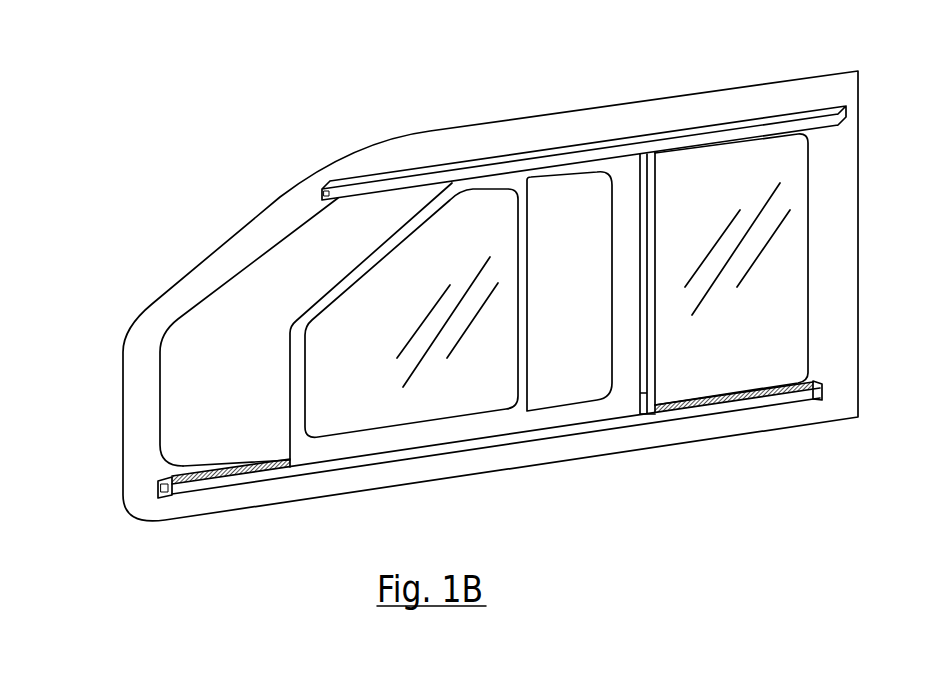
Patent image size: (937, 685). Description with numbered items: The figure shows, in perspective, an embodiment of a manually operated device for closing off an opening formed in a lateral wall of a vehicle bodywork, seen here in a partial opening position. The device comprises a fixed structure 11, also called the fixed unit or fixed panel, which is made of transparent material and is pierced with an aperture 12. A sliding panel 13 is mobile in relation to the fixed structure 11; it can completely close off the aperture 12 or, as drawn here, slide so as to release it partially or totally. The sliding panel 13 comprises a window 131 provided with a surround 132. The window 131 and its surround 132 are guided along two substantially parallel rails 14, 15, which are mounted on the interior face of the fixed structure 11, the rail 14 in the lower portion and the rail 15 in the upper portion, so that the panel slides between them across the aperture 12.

The fixed structure 11 is at (752, 103).
The aperture 12 is at (233, 340).
The sliding panel 13 is at (345, 270).
The window 131 is at (447, 248).
The surround 132 is at (620, 203).
The rail 14 is at (202, 488).
The rail 15 is at (513, 160).